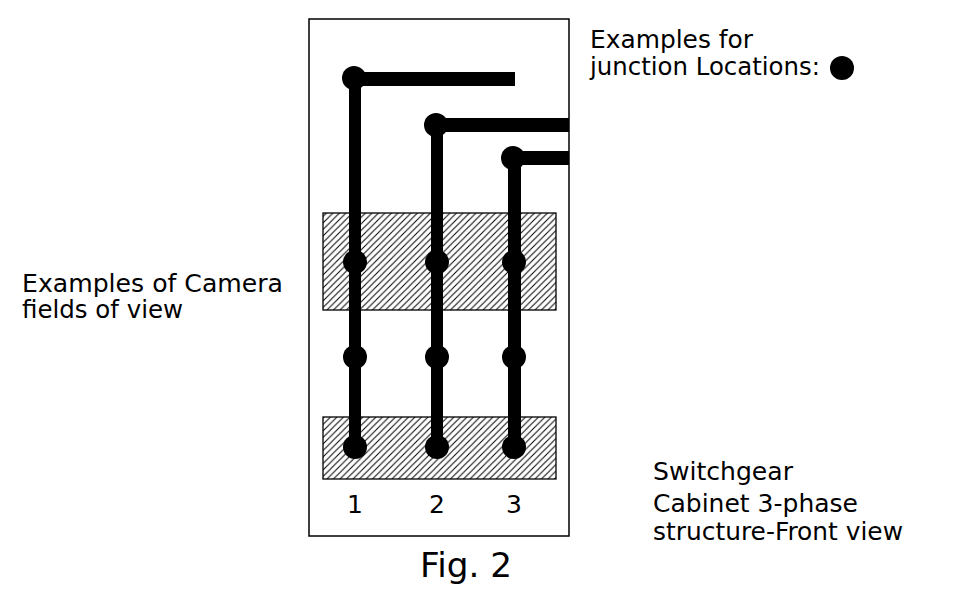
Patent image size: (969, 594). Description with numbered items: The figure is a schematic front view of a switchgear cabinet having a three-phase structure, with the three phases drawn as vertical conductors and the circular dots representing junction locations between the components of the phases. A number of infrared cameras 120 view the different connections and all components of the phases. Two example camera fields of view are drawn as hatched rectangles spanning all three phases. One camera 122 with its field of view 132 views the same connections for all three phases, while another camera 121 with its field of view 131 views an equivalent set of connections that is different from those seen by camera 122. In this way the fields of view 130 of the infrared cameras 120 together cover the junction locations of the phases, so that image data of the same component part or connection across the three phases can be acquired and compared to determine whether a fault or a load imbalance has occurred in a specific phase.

The infrared cameras 120 is at (614, 342).
The camera 121 is at (613, 258).
The camera 122 is at (614, 426).
The fields of view 130 is at (614, 342).
The field of view 131 is at (550, 271).
The field of view 132 is at (552, 437).